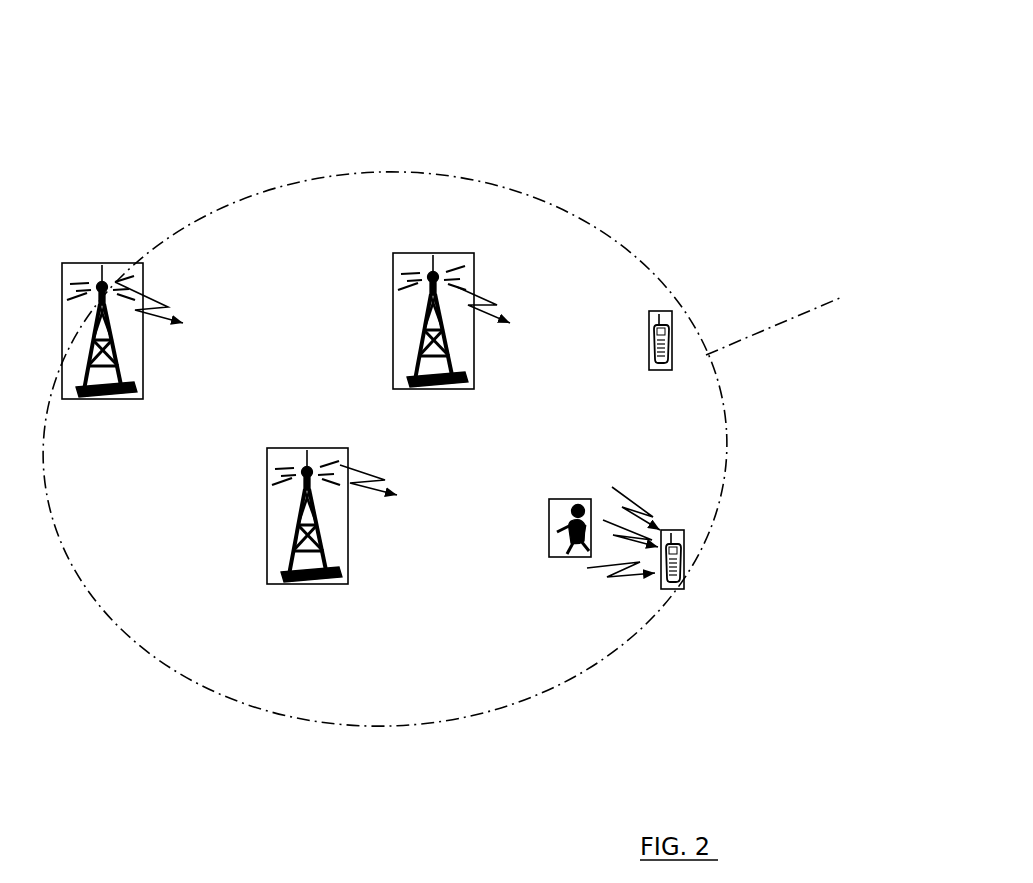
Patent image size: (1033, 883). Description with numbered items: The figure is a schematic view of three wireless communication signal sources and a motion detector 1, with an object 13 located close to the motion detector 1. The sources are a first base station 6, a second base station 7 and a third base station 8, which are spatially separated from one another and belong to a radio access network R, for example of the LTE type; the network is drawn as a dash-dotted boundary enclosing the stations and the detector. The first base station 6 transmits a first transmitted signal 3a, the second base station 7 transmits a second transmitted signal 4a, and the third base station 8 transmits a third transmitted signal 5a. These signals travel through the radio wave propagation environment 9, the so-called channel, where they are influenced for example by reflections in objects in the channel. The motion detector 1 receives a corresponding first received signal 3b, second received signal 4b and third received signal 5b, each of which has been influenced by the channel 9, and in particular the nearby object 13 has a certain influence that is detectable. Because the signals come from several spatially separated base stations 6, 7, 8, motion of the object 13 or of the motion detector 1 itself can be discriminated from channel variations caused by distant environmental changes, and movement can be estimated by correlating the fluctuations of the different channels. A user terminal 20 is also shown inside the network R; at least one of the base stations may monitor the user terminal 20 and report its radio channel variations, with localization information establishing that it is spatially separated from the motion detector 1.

The radio access network R is at (353, 107).
The second base station 7 is at (73, 263).
The second transmitted signal 4a is at (153, 300).
The first base station 6 is at (421, 253).
The first transmitted signal 3a is at (487, 297).
The third base station 8 is at (285, 581).
The third transmitted signal 5a is at (376, 493).
The user terminal 20 is at (668, 300).
The radio wave propagation environment 9 is at (785, 321).
The object 13 is at (582, 558).
The motion detector 1 is at (692, 523).
The first received signal 3b is at (638, 498).
The second received signal 4b is at (607, 523).
The third received signal 5b is at (622, 577).